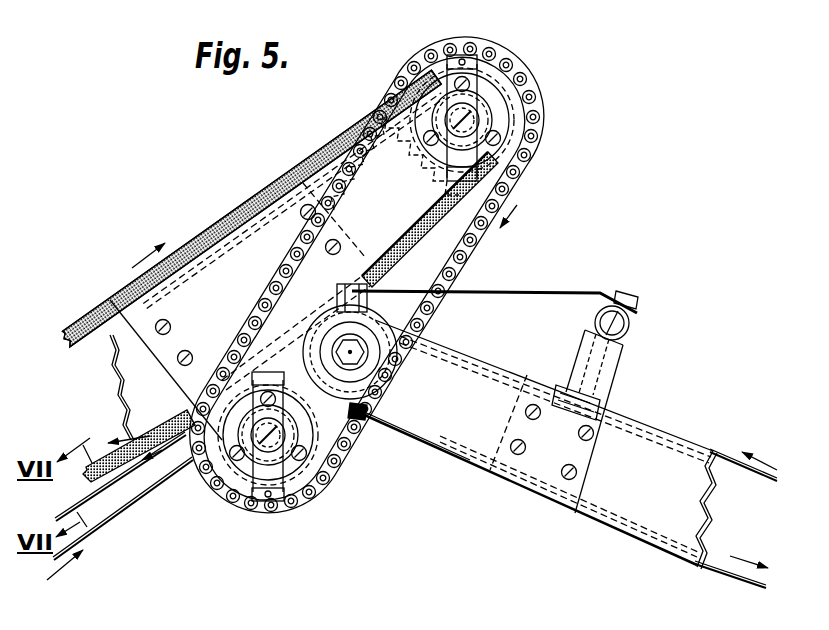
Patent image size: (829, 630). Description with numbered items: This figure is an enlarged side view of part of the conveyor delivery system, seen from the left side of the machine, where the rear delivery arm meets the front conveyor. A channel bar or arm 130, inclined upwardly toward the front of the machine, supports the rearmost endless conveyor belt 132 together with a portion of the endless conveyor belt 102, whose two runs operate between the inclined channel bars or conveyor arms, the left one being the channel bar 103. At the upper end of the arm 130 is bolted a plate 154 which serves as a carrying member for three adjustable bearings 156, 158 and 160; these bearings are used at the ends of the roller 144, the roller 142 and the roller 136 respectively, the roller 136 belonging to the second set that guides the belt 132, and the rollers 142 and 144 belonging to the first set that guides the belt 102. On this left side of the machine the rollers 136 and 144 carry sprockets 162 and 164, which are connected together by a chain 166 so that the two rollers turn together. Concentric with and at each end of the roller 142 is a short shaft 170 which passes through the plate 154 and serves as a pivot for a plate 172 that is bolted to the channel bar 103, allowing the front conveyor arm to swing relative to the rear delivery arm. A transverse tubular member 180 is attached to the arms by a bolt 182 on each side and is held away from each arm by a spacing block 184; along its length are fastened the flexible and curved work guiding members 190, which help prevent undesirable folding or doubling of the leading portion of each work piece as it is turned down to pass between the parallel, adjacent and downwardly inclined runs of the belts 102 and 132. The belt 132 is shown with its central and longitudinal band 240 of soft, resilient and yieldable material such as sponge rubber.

The endless conveyor belt 102 is at (140, 470).
The channel bar or conveyor arm 103 is at (683, 560).
The channel bar or arm 130 is at (118, 335).
The rearmost endless conveyor belt 132 is at (97, 445).
The roller 136 is at (518, 120).
The roller 142 is at (422, 325).
The roller 144 is at (335, 481).
The plate 154 is at (263, 222).
The adjustable bearing 156 is at (237, 500).
The adjustable bearing 158 is at (383, 403).
The adjustable bearing 160 is at (505, 82).
The sprocket 162 is at (492, 76).
The sprocket 164 is at (308, 497).
The chain 166 is at (468, 258).
The short shaft 170 is at (362, 362).
The plate 172 is at (464, 450).
The transverse tubular member 180 is at (630, 323).
The bolt 182 is at (639, 300).
The spacing block 184 is at (612, 366).
The flexible and curved work guiding member 190 is at (540, 293).
The soft resilient band 240 is at (207, 228).